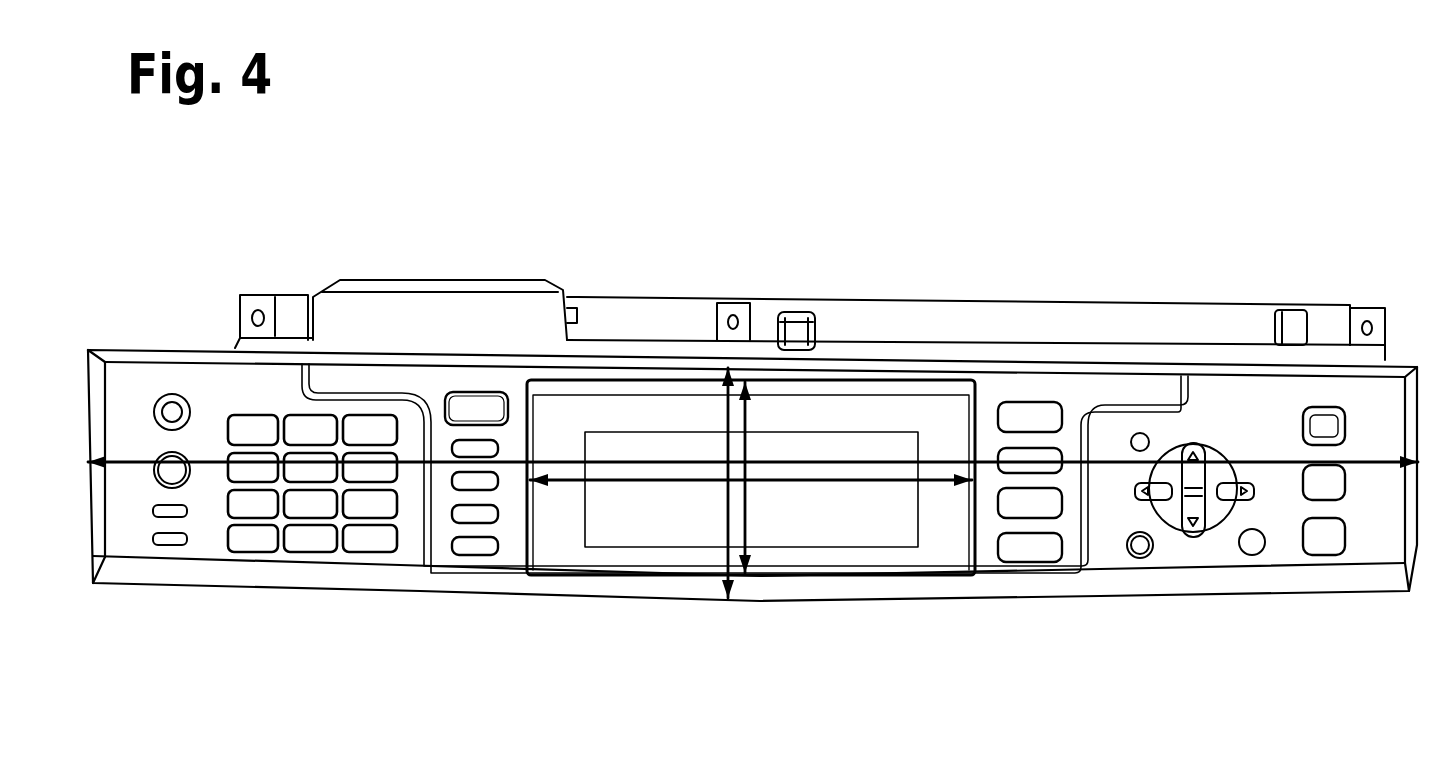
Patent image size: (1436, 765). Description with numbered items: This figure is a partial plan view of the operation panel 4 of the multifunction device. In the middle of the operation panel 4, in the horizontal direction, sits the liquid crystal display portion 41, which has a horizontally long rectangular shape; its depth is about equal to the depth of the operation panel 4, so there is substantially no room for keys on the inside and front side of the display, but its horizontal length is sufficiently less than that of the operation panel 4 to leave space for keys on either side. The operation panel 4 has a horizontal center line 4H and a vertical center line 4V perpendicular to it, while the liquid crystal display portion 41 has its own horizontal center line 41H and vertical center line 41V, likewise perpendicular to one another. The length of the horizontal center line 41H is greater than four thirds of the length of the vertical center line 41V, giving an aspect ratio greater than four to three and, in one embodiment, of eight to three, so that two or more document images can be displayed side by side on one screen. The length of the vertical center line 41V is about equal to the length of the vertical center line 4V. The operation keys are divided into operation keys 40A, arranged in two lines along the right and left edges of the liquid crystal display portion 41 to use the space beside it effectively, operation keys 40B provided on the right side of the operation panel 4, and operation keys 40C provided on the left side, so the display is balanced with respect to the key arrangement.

The operation panel 4 is at (1197, 268).
The liquid crystal display portion 41 is at (848, 418).
The operation keys 40A is at (470, 557).
The operation keys 40B is at (1283, 548).
The operation keys 40C is at (315, 555).
The horizontal center line 4H is at (625, 463).
The vertical center line 4V is at (727, 503).
The horizontal center line 41H is at (873, 481).
The vertical center line 41V is at (750, 505).